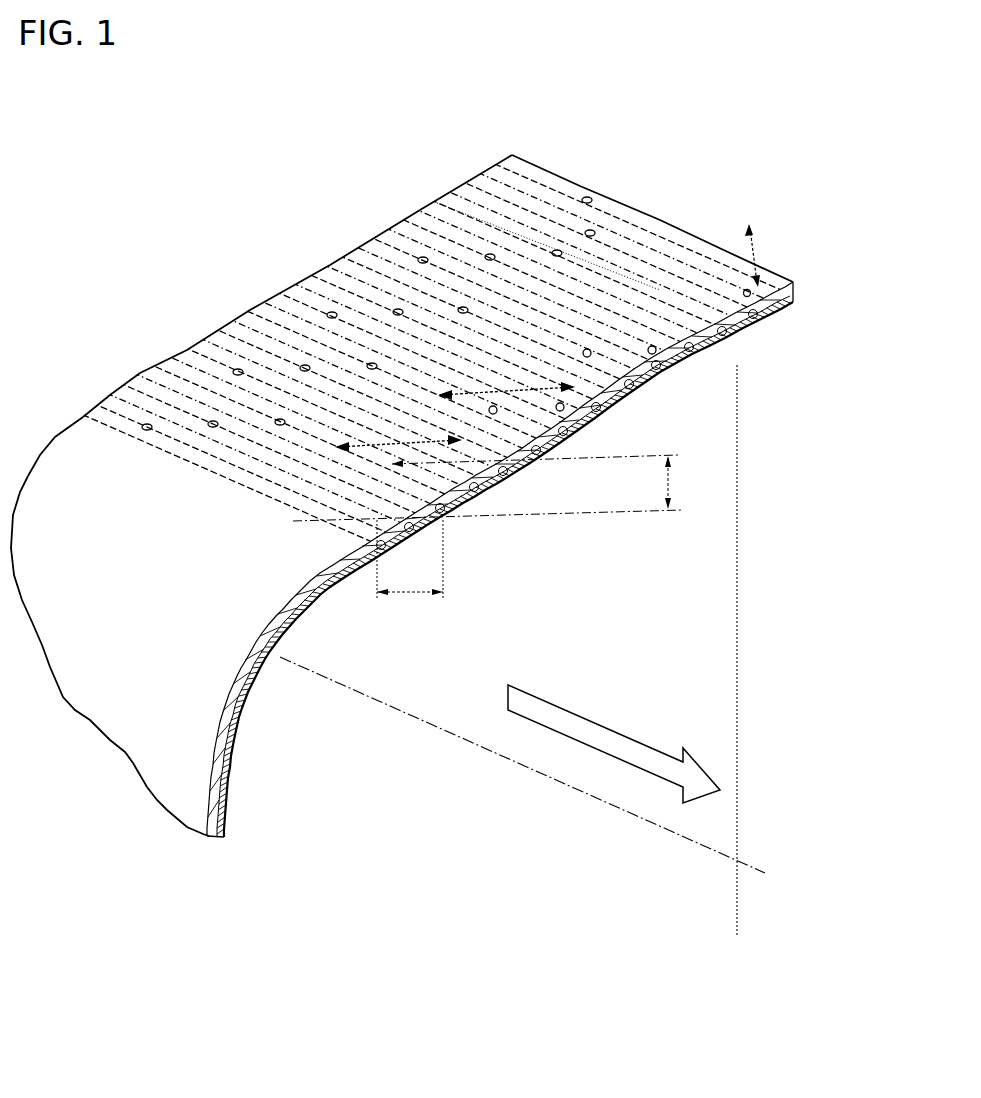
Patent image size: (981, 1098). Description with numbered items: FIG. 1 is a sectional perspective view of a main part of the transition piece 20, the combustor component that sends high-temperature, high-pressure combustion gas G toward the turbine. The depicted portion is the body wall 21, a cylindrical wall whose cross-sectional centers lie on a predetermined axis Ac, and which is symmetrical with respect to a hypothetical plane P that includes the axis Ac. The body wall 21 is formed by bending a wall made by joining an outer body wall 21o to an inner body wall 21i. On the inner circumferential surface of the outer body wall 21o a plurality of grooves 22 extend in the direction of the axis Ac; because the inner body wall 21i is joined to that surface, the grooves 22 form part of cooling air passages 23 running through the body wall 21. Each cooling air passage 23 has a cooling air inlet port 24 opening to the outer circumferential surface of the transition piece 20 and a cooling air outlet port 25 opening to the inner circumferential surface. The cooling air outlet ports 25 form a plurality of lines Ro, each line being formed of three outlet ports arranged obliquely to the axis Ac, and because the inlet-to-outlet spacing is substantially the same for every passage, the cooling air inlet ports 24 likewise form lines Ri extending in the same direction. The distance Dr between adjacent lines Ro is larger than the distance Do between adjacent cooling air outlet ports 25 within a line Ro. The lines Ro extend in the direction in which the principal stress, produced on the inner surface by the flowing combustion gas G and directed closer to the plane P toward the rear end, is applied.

The transition piece 20 is at (452, 170).
The body wall 21 is at (303, 788).
The inner body wall 21i is at (228, 757).
The outer body wall 21o is at (225, 813).
The grooves 22 is at (173, 458).
The cooling air passages 23 is at (230, 450).
The cooling air inlet port 24 is at (147, 424).
The cooling air outlet port 25 is at (587, 349).
The lines of cooling air inlet ports Ri is at (207, 261).
The lines of cooling air outlet ports Ro is at (730, 136).
The distance between adjacent lines Ro Dr is at (683, 482).
The distance between adjacent cooling air outlet ports Do is at (410, 571).
The combustion gas G is at (603, 730).
The axis Ac is at (556, 780).
The hypothetical plane P is at (737, 893).